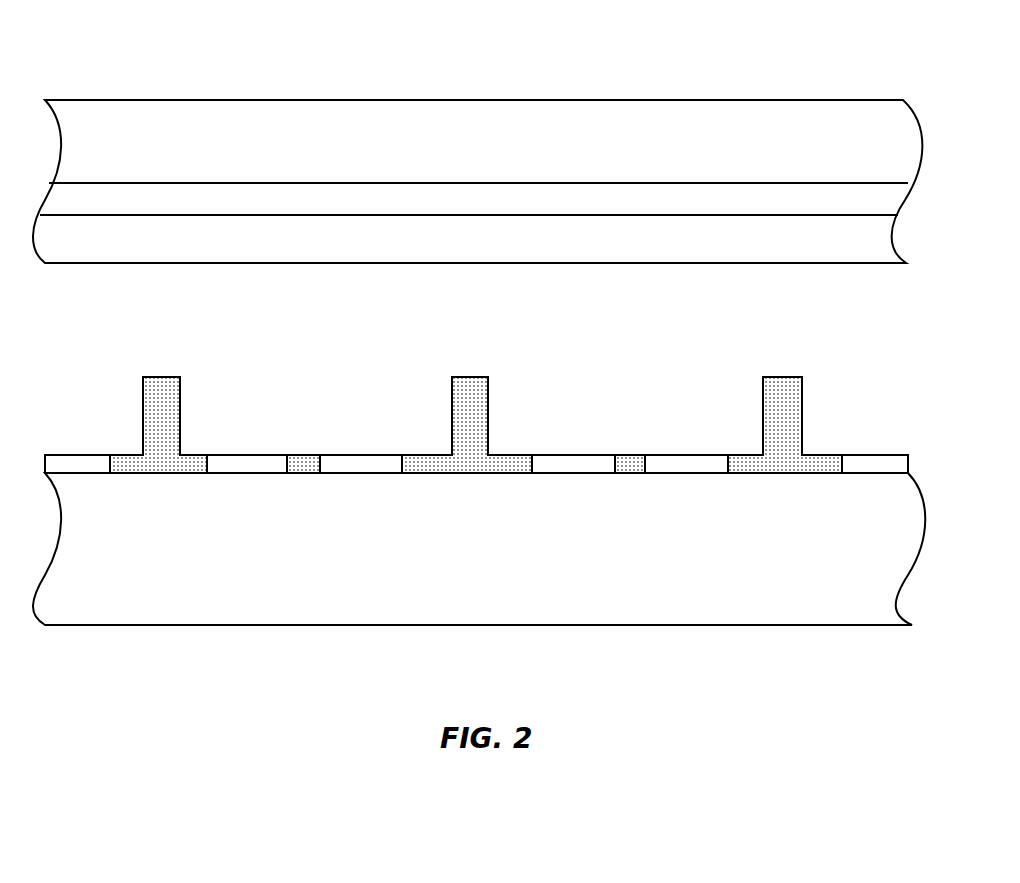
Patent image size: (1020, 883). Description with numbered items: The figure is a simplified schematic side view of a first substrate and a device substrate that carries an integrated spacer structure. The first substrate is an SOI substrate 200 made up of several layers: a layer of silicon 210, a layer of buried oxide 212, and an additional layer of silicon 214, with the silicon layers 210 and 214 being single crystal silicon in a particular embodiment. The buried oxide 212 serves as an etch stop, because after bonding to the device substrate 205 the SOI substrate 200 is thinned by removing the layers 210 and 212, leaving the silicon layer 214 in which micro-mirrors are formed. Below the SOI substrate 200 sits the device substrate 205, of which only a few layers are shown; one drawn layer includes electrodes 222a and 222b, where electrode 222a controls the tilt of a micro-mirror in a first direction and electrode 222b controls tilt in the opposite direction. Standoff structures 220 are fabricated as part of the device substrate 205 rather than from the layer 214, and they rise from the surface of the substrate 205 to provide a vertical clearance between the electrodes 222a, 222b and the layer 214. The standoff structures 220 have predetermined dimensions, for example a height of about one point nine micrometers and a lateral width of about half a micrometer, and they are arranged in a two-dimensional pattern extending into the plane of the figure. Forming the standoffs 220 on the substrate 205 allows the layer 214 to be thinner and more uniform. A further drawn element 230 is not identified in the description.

The SOI substrate 200 is at (739, 72).
The layer of silicon 210 is at (831, 158).
The layer of buried oxide 212 is at (831, 210).
The additional layer of silicon 214 is at (831, 250).
The device substrate 205 is at (848, 606).
The standoff structures 220 is at (170, 413).
The electrode 222a is at (247, 467).
The electrode 222b is at (362, 467).
The conductive pad 230 is at (632, 465).